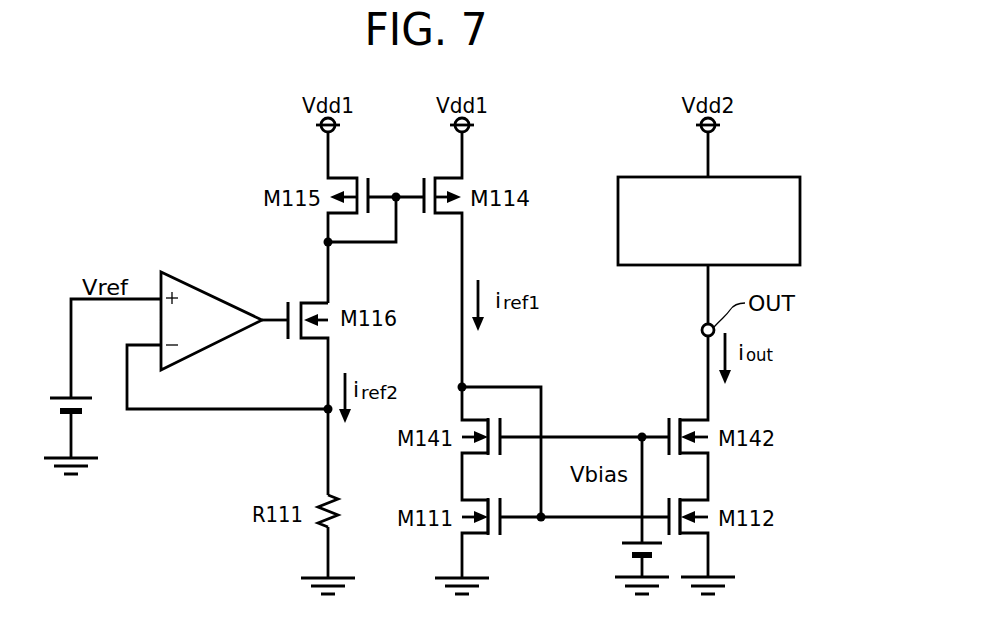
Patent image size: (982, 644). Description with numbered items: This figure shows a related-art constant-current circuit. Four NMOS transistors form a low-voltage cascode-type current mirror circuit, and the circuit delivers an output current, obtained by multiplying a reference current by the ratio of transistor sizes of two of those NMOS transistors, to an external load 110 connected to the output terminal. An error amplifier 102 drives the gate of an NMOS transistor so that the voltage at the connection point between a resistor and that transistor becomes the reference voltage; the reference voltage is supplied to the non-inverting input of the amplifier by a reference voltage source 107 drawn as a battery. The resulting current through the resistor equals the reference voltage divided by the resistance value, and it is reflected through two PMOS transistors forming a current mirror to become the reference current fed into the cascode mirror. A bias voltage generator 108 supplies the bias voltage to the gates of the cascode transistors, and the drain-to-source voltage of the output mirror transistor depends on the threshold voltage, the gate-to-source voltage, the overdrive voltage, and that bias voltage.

The error amplifier 102 is at (237, 282).
The reference voltage source (battery) 107 is at (94, 410).
The bias voltage generator 108 is at (617, 549).
The external load 110 is at (770, 177).